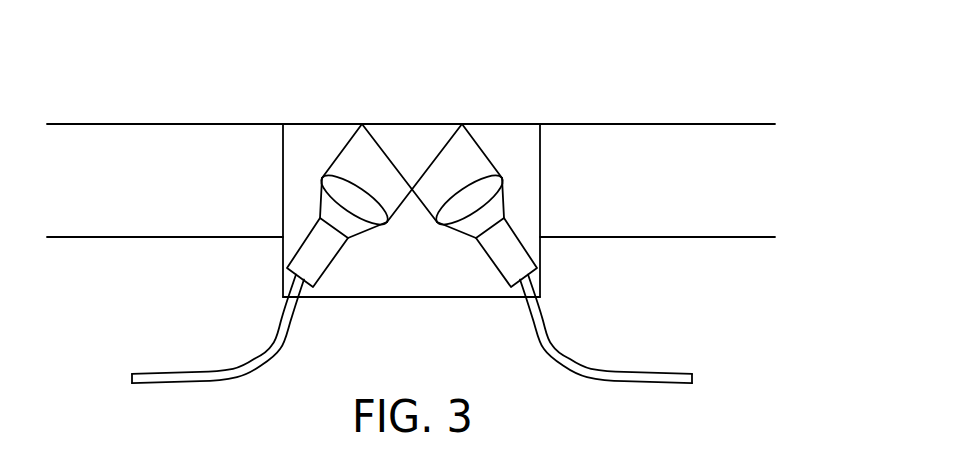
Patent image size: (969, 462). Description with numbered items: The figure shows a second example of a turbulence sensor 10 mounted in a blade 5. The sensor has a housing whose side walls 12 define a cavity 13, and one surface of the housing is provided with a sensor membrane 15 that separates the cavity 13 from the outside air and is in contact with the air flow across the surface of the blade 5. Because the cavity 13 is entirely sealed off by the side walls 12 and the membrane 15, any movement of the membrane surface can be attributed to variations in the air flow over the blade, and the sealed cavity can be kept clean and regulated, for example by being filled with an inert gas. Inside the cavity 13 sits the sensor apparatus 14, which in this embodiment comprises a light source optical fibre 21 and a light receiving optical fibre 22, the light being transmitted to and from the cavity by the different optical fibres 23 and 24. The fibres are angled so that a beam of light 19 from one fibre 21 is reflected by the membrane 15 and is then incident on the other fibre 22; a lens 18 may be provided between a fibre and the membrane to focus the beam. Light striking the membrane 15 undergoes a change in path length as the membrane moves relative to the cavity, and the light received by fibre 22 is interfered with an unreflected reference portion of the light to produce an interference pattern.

The blade 5 is at (726, 132).
The sensor 10 is at (274, 71).
The side walls 12 is at (541, 251).
The cavity 13 is at (422, 292).
The sensor apparatus 14 is at (297, 190).
The sensor membrane 15 is at (497, 123).
The lens 18 is at (374, 226).
The beam of light 19 is at (493, 166).
The light source optical fibre 21 is at (327, 268).
The light receiving optical fibre 22 is at (497, 268).
The light source optical fibre 23 is at (276, 350).
The light receiving optical fibre 24 is at (548, 350).